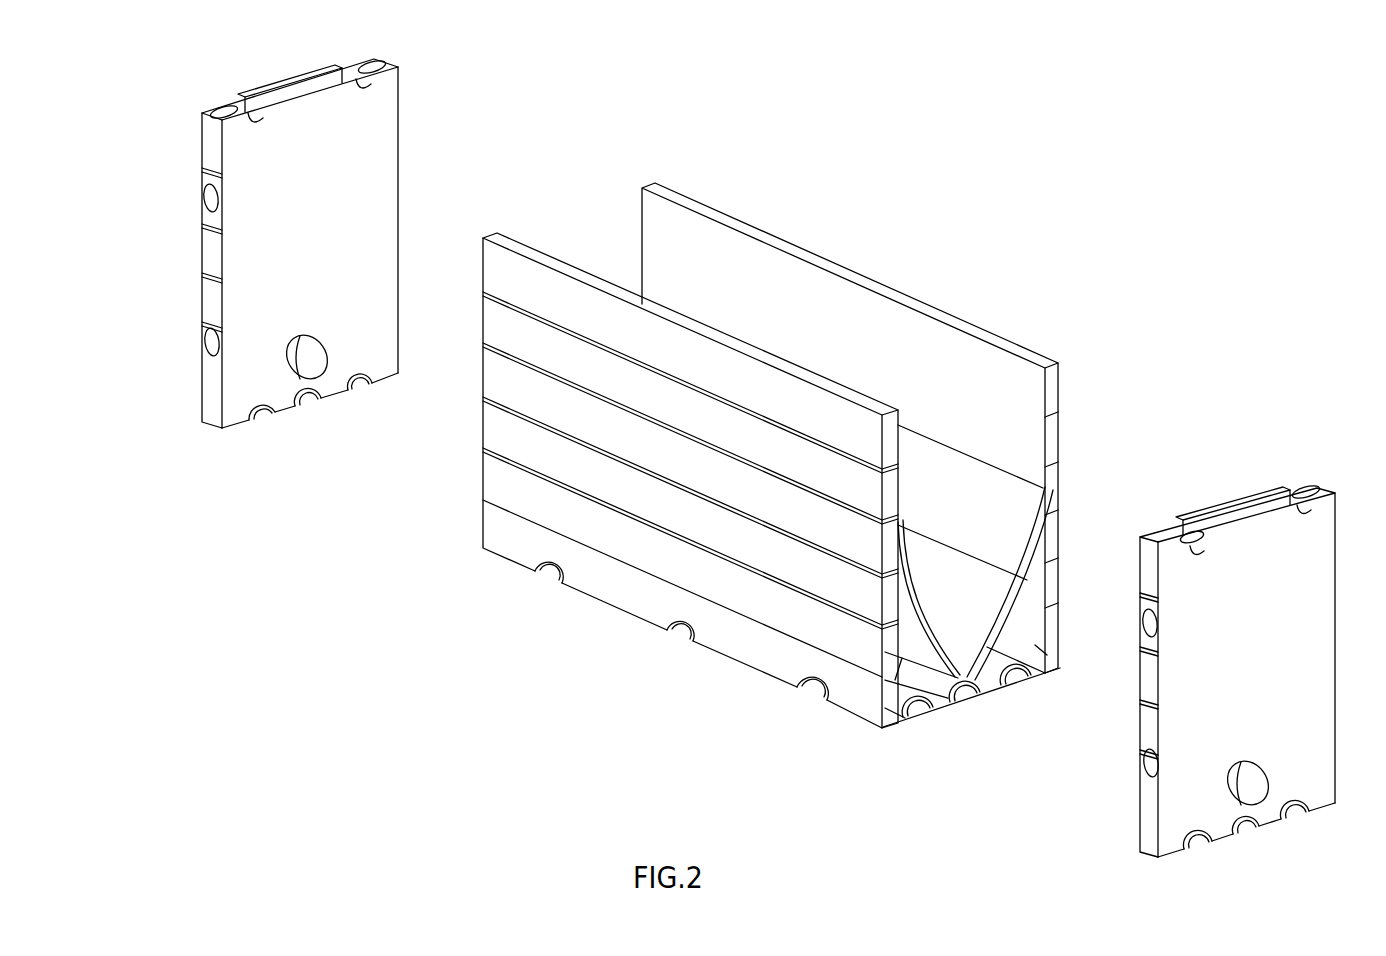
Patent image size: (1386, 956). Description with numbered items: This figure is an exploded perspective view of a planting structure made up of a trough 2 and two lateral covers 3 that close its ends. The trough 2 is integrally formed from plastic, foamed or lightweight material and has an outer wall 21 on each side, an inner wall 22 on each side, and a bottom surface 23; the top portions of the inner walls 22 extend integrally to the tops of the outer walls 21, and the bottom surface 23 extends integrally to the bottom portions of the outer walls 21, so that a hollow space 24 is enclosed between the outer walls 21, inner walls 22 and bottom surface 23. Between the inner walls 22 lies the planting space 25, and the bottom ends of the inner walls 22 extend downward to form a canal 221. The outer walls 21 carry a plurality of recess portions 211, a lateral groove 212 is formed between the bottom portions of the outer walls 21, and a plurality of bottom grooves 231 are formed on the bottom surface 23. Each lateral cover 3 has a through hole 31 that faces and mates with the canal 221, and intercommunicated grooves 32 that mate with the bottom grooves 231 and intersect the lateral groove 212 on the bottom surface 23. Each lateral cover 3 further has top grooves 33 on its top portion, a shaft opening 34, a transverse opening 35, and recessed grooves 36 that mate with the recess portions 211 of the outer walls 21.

The trough 2 is at (815, 440).
The outer wall 21 is at (686, 507).
The recess portion 211 is at (775, 583).
The lateral groove 212 is at (797, 687).
The inner wall 22 is at (898, 408).
The canal 221 is at (1000, 647).
The bottom surface 23 is at (949, 729).
The bottom groove 231 is at (970, 693).
The hollow space 24 is at (1058, 668).
The planting space 25 is at (940, 385).
The lateral cover 3 is at (308, 258).
The through hole 31 is at (387, 377).
The intercommunicated groove 32 is at (263, 413).
The top groove 33 is at (1203, 520).
The shaft opening 34 is at (1313, 483).
The transverse opening 35 is at (212, 342).
The recessed groove 36 is at (202, 163).